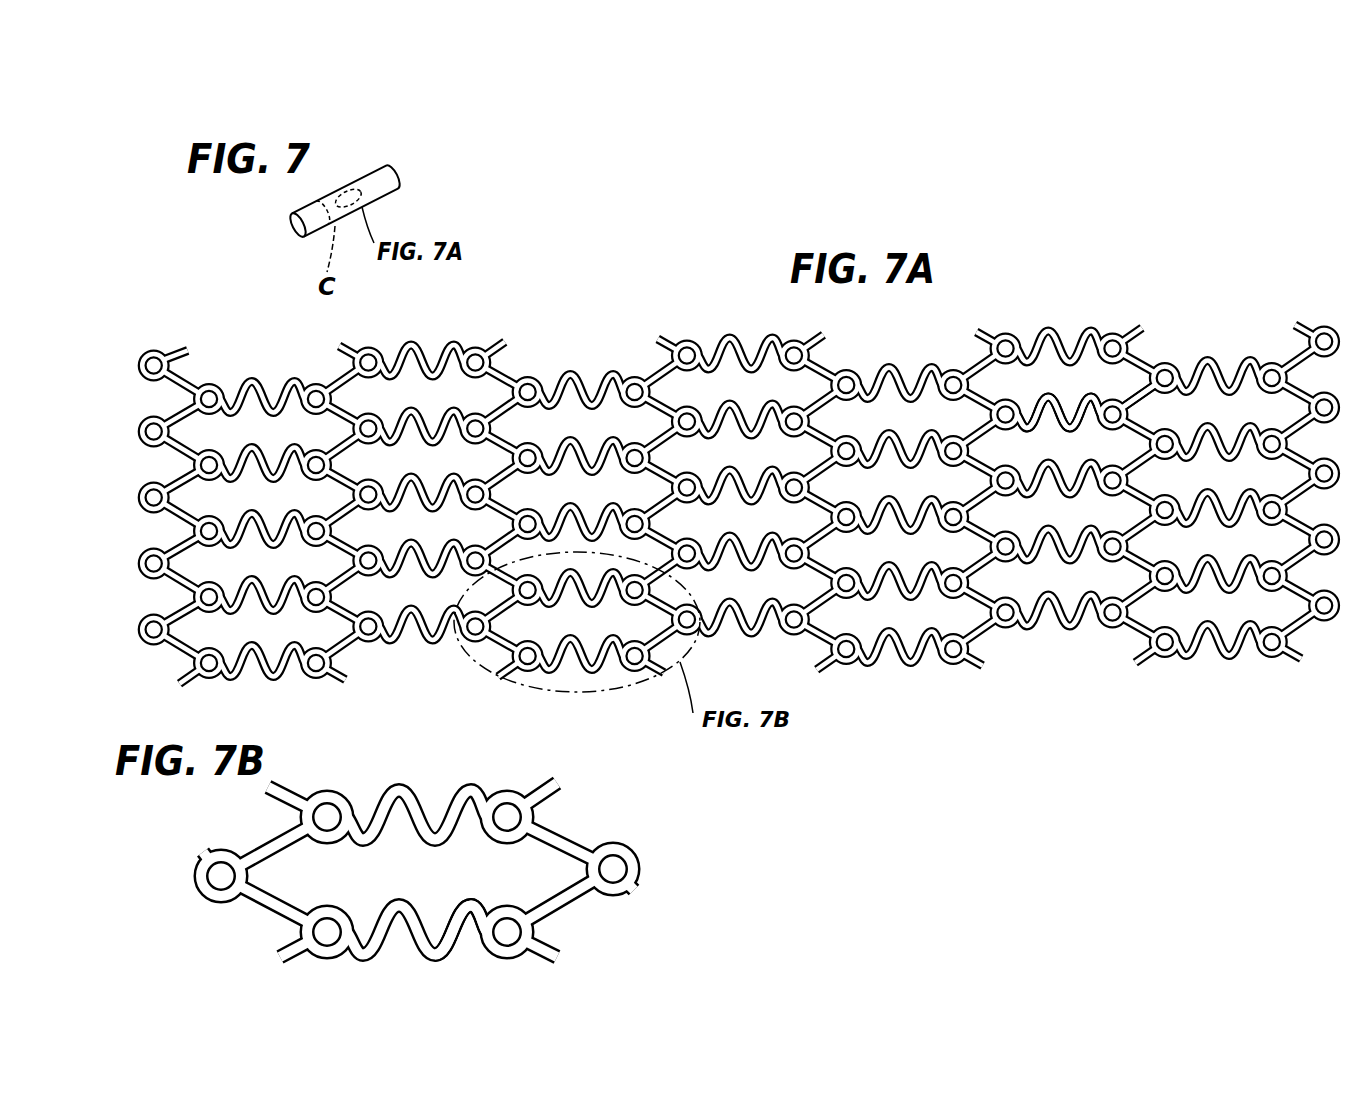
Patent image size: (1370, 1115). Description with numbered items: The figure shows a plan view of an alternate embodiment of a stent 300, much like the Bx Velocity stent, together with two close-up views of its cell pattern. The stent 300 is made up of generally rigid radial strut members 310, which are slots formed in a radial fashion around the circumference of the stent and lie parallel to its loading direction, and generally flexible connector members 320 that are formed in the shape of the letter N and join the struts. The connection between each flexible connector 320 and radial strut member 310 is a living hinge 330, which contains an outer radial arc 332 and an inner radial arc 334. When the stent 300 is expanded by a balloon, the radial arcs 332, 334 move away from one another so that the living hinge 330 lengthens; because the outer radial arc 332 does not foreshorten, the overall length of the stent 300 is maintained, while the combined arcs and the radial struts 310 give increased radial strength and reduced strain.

In FIG. 7, the stent 300 is at (280, 211).
In FIG. 7A, the radial strut member 310 is at (1147, 370).
In FIG. 7B, the radial strut member 310 is at (572, 830).
In FIG. 7A, the flexible connector member 320 is at (1065, 362).
In FIG. 7B, the flexible connector member 320 is at (398, 892).
In FIG. 7B, the living hinge 330 is at (511, 780).
In FIG. 7B, the outer radial arc 332 is at (483, 949).
In FIG. 7B, the inner radial arc 334 is at (567, 947).